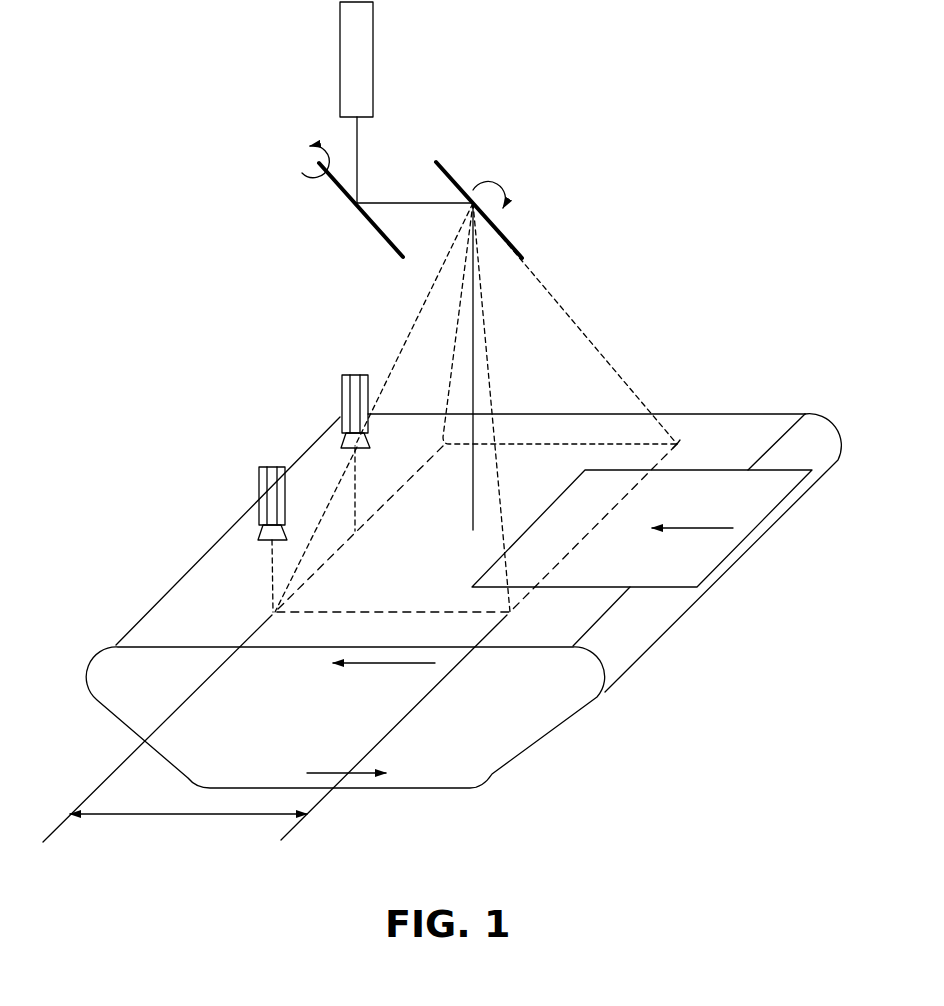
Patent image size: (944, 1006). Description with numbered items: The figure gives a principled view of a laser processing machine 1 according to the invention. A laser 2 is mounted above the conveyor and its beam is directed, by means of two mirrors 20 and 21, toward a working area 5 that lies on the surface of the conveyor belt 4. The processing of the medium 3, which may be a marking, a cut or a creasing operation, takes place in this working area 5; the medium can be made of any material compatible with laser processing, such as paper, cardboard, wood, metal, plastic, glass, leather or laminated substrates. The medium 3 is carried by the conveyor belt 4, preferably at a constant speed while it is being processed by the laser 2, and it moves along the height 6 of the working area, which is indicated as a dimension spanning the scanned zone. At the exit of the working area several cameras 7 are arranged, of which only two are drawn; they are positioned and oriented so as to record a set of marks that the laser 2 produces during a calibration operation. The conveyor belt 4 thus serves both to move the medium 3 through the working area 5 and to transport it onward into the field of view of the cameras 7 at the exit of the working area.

The machine 1 is at (780, 172).
The laser 2 is at (373, 37).
The medium 3 is at (748, 515).
The conveyor belt 4 is at (193, 612).
The working area 5 is at (587, 444).
The height of the working area 6 is at (186, 818).
The cameras 7 is at (342, 392).
The mirror 20 is at (450, 178).
The mirror 21 is at (337, 190).